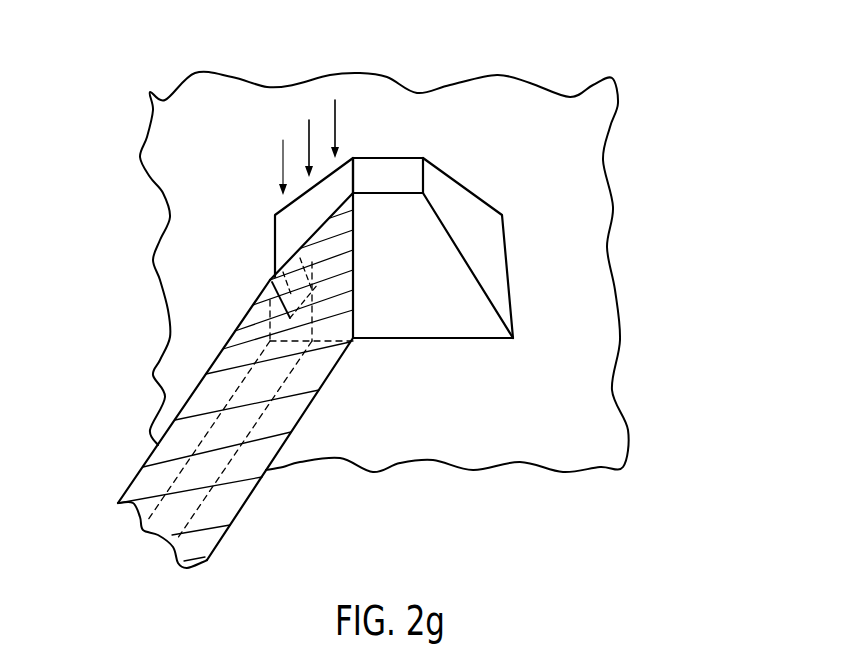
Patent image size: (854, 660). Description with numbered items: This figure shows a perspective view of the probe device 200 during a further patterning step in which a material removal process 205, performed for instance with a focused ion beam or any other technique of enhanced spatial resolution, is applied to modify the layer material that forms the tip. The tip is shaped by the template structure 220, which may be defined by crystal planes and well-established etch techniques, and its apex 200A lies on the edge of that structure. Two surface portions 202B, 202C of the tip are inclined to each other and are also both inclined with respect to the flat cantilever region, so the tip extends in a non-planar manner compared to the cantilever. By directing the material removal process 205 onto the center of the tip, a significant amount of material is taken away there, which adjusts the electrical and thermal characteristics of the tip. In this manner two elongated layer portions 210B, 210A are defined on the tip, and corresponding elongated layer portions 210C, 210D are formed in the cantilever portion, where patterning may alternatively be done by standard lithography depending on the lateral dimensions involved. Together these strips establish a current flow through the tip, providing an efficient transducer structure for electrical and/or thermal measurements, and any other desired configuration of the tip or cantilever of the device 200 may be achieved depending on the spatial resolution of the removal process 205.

The device 200 is at (658, 80).
The apex 200A is at (361, 180).
The material removal process 205 is at (282, 161).
The template structure 220 is at (477, 169).
The surface portion 202B is at (366, 297).
The surface portion 202C is at (266, 263).
The elongated layer portion 210A is at (348, 243).
The elongated layer portion 210B is at (294, 251).
The elongated layer portion 210C is at (243, 484).
The elongated layer portion 210D is at (172, 443).